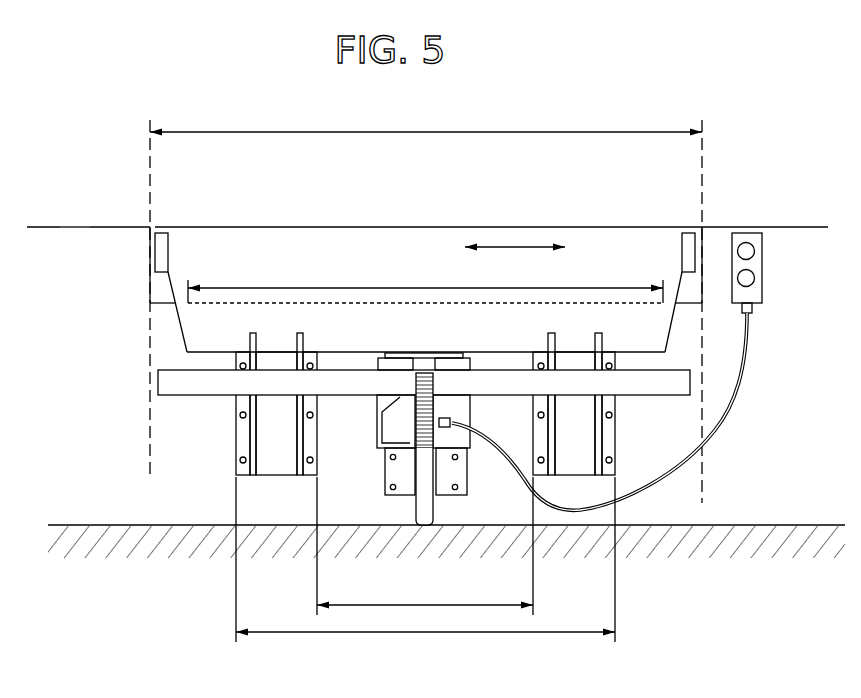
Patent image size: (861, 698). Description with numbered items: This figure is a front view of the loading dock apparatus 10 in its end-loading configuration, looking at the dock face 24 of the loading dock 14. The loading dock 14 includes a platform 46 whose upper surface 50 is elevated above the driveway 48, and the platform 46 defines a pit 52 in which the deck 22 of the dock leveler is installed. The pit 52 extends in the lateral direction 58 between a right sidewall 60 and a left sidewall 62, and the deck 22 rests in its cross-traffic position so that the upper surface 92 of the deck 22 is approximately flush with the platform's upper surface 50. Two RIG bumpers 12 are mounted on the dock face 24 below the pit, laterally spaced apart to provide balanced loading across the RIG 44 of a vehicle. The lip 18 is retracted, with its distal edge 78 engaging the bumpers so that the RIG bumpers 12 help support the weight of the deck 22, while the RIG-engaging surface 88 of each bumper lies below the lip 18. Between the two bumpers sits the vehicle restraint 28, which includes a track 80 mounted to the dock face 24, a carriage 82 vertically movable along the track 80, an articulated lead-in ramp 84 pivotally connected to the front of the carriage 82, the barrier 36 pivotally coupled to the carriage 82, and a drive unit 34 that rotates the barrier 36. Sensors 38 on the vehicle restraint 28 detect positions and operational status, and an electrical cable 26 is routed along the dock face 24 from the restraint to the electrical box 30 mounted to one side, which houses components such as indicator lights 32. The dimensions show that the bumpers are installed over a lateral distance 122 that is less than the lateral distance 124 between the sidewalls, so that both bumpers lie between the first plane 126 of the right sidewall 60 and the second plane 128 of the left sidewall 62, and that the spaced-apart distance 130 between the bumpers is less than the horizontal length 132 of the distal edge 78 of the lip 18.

The loading dock apparatus 10 is at (760, 160).
The RIG bumper 12 is at (235, 447).
The loading dock 14 is at (99, 437).
The lip 18 is at (180, 325).
The deck 22 is at (160, 229).
The dock face 24 is at (100, 247).
The electrical cable 26 is at (733, 410).
The vehicle restraint 28 is at (388, 470).
The electrical box 30 is at (763, 292).
The indicator lights 32 is at (757, 252).
The drive unit 34 is at (395, 428).
The barrier 36 is at (425, 375).
The sensors 38 is at (450, 419).
The RIG 44 is at (158, 381).
The platform 46 is at (75, 226).
The driveway 48 is at (72, 523).
The upper surface 50 is at (49, 226).
The pit 52 is at (158, 288).
The lateral direction 58 is at (511, 247).
The right sidewall 60 is at (697, 253).
The left sidewall 62 is at (152, 255).
The distal edge 78 is at (208, 353).
The track 80 is at (447, 497).
The carriage 82 is at (378, 398).
The lead-in ramp 84 is at (420, 504).
The RIG-engaging surface 88 is at (270, 457).
The upper surface of the deck 92 is at (390, 226).
The lateral distance 122 is at (393, 634).
The lateral distance 124 is at (355, 134).
The first plane 126 is at (702, 192).
The second plane 128 is at (150, 192).
The spaced-apart distance 130 is at (422, 604).
The horizontal length 132 is at (369, 288).